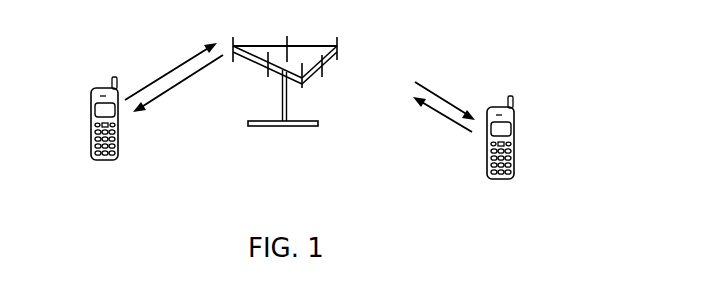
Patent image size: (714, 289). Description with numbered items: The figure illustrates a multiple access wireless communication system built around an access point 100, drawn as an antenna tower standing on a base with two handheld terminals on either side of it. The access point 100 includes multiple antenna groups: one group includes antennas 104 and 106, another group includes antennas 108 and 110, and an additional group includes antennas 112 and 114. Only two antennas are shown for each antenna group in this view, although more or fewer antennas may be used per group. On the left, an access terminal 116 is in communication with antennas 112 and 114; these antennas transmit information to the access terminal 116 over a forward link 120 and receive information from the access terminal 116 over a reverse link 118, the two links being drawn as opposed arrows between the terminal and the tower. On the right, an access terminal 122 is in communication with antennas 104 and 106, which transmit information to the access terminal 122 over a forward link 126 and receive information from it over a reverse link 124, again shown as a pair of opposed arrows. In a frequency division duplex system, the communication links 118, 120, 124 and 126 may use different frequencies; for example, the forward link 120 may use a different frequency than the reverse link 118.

The access point 100 is at (292, 127).
The antenna 104 is at (302, 88).
The antenna 106 is at (323, 73).
The antenna 108 is at (340, 56).
The antenna 110 is at (287, 37).
The antenna 112 is at (232, 38).
The antenna 114 is at (267, 72).
The access terminal 116 is at (90, 102).
The reverse link 118 is at (178, 65).
The forward link 120 is at (168, 92).
The access terminal 122 is at (514, 128).
The reverse link 124 is at (450, 120).
The forward link 126 is at (443, 102).